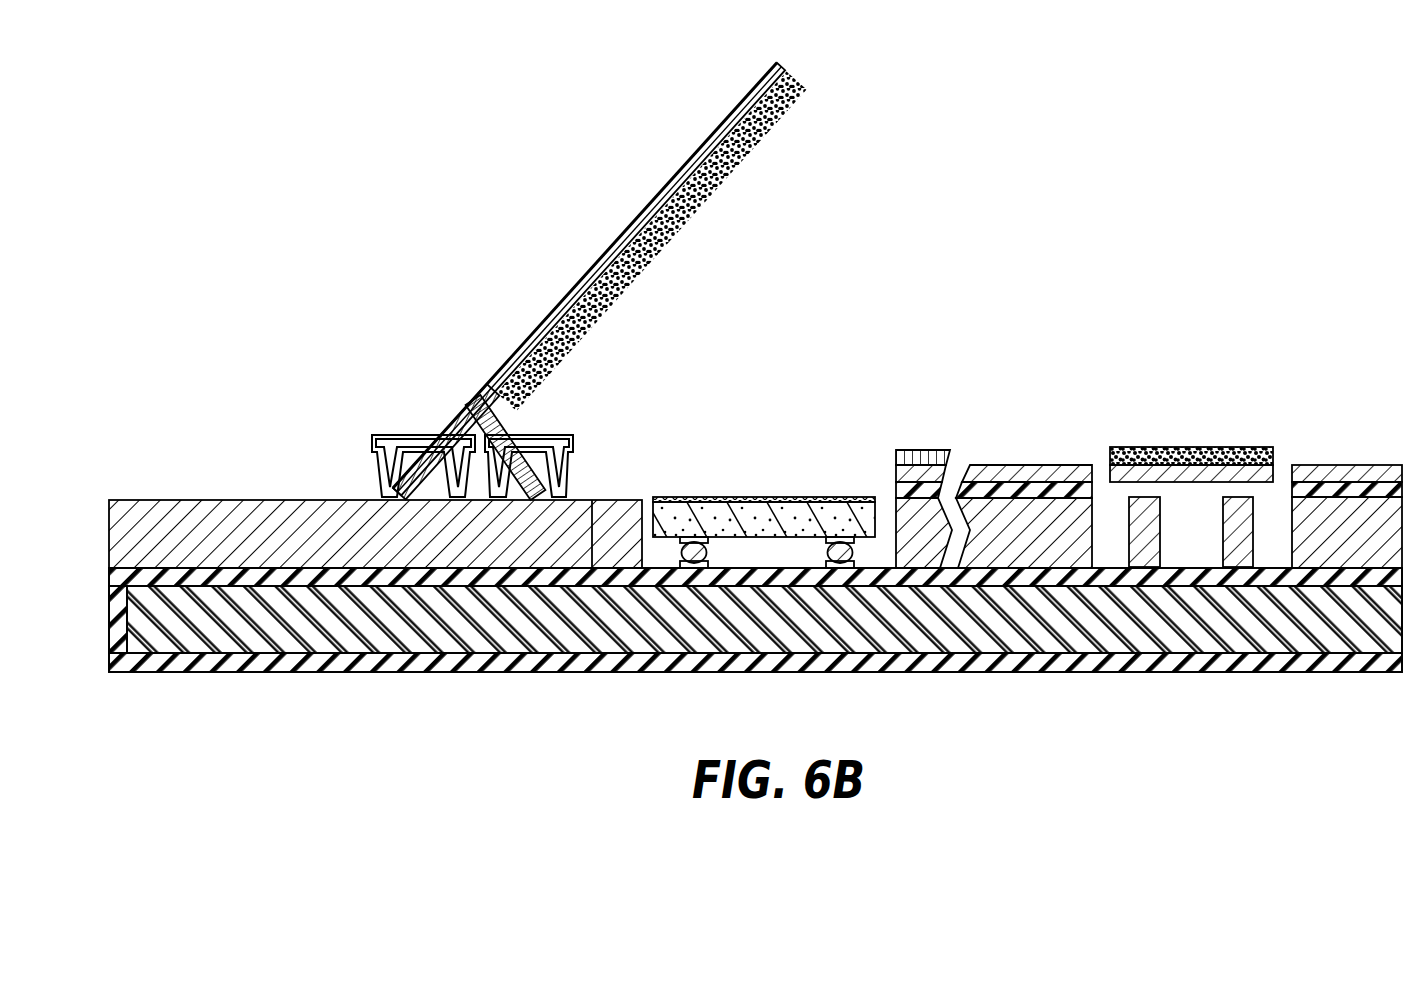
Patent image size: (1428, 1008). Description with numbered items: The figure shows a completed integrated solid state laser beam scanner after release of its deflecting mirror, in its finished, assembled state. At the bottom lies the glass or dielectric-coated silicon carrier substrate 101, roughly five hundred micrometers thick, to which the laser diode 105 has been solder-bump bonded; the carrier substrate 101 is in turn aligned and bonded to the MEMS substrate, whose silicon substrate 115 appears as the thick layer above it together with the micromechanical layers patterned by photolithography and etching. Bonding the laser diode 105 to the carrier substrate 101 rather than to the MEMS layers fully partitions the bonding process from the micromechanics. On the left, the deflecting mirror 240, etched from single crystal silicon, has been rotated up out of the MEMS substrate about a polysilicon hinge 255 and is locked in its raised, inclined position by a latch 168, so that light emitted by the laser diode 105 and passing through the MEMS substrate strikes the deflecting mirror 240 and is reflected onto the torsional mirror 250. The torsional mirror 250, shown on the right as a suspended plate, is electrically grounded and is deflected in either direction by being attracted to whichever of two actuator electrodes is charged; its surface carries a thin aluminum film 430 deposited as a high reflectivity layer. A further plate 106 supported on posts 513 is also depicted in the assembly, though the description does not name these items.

The carrier substrate 101 is at (963, 625).
The silicon substrate 115 is at (247, 500).
The laser diode 105 is at (767, 557).
The movable plate 106 is at (744, 510).
The support post 513 is at (708, 545).
The latch 168 is at (507, 423).
The deflecting mirror 240 is at (606, 254).
The polysilicon hinge 255 is at (428, 435).
The torsional mirror 250 is at (1110, 472).
The aluminum film 430 is at (1178, 446).